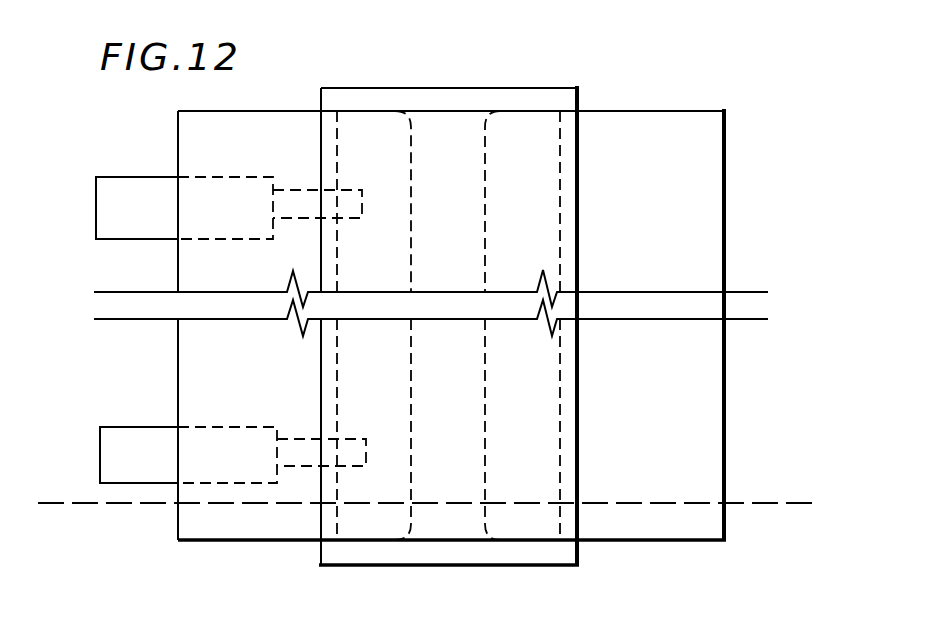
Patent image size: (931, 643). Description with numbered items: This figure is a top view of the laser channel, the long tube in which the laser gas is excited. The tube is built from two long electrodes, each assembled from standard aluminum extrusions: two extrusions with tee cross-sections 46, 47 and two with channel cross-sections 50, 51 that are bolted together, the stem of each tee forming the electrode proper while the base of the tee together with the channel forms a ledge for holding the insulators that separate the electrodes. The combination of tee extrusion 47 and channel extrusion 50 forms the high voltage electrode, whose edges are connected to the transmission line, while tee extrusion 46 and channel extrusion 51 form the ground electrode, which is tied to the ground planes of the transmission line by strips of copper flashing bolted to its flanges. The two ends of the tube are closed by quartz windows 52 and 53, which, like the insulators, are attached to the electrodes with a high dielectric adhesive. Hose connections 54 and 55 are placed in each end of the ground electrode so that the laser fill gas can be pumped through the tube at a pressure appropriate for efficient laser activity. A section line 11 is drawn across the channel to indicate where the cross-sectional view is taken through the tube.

The section line 11- 11 is at (38, 522).
The tee cross-section electrode 46 is at (410, 413).
The tee cross-section electrode 47 is at (488, 463).
The channel cross-section extrusion 50 is at (713, 117).
The channel cross-section extrusion 51 is at (182, 369).
The quartz window 52 is at (487, 89).
The quartz window 53 is at (340, 570).
The hose connection 54 is at (103, 427).
The hose connection 55 is at (99, 176).